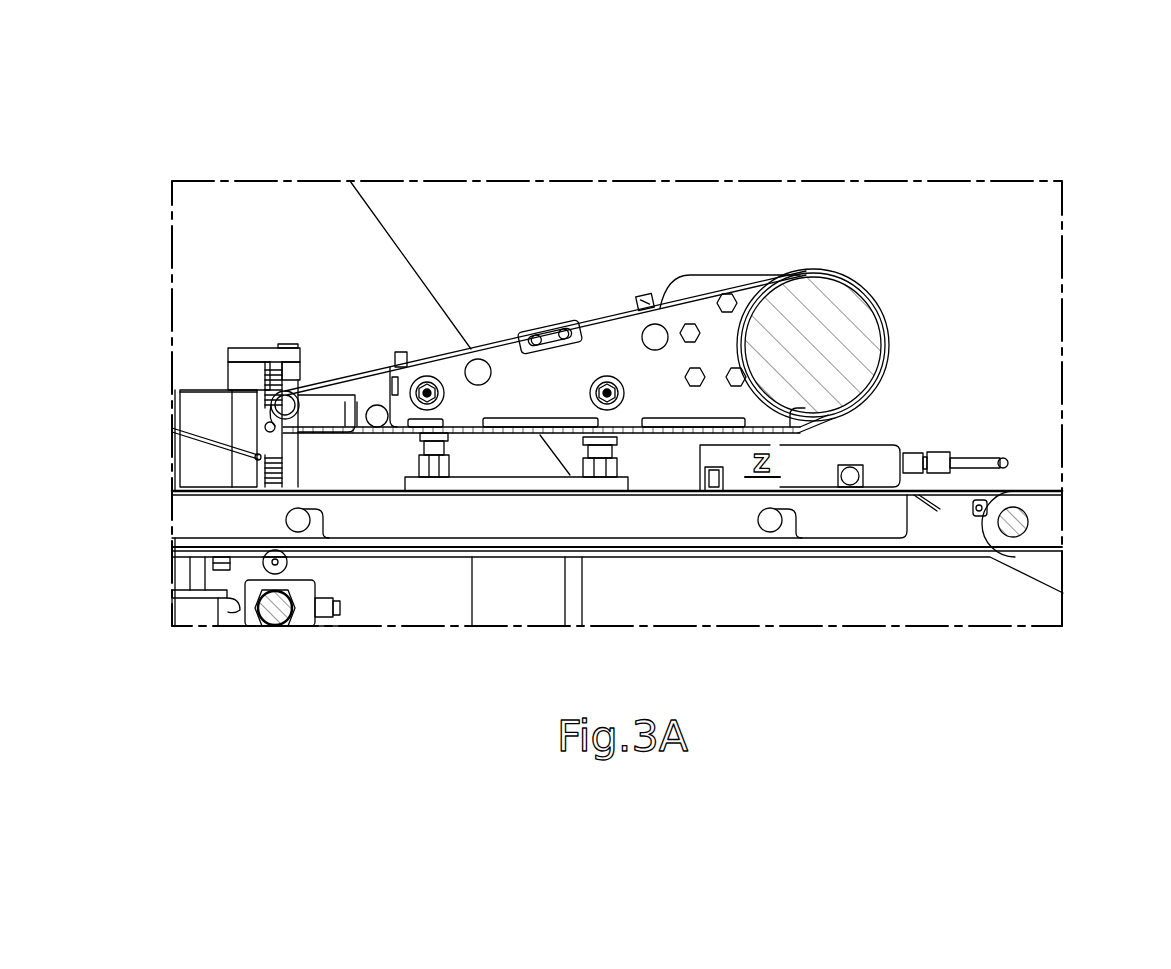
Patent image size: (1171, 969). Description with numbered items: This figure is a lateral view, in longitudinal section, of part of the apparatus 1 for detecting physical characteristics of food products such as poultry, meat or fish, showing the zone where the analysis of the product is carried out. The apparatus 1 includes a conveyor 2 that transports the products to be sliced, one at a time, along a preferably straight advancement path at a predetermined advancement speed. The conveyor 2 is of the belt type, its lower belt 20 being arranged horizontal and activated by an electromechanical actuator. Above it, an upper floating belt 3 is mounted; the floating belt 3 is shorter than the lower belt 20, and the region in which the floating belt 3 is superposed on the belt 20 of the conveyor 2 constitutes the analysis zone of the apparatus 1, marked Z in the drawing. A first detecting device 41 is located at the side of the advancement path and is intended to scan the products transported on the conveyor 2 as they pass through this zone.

The apparatus 1 is at (710, 122).
The conveyor 2 is at (983, 483).
The upper floating belt 3 is at (509, 292).
The belt 20 is at (352, 490).
The first detecting device 41 is at (879, 460).